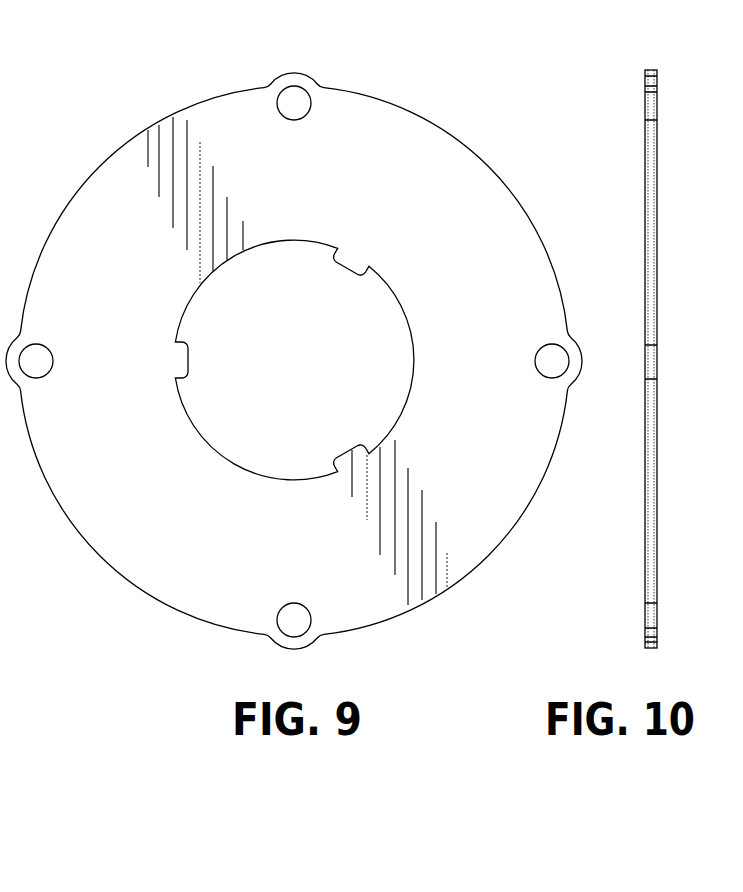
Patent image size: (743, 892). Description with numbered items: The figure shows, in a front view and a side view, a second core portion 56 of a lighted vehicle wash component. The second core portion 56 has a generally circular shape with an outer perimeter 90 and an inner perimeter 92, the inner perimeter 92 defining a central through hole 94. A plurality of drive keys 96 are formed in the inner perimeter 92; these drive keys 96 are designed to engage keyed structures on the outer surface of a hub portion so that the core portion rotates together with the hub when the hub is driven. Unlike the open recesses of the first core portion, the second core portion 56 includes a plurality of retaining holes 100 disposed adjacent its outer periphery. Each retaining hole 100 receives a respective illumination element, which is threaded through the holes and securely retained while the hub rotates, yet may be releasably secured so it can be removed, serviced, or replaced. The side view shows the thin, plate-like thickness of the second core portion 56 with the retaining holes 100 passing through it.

In FIG. 9, the second core portion 56 is at (314, 344).
In FIG. 10, the second core portion 56 is at (670, 238).
In FIG. 9, the outer perimeter 90 is at (543, 242).
In FIG. 9, the inner perimeter 92 is at (327, 371).
In FIG. 9, the through hole 94 is at (327, 371).
In FIG. 9, the drive keys 96 is at (193, 358).
In FIG. 9, the retaining holes 100 is at (297, 97).
In FIG. 10, the retaining holes 100 is at (657, 355).